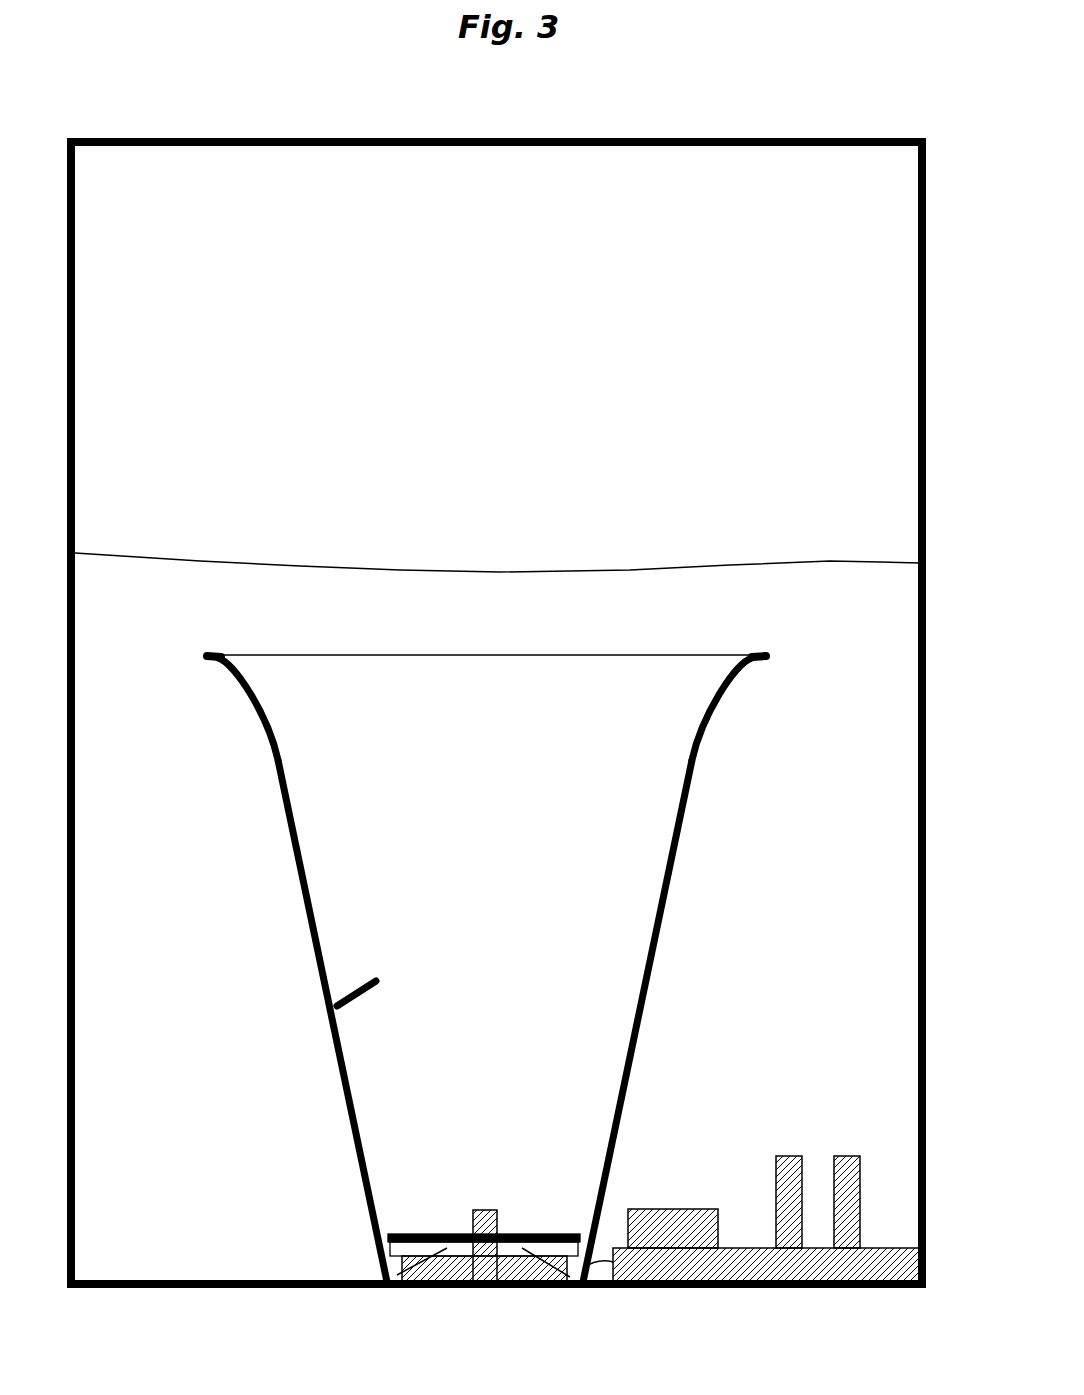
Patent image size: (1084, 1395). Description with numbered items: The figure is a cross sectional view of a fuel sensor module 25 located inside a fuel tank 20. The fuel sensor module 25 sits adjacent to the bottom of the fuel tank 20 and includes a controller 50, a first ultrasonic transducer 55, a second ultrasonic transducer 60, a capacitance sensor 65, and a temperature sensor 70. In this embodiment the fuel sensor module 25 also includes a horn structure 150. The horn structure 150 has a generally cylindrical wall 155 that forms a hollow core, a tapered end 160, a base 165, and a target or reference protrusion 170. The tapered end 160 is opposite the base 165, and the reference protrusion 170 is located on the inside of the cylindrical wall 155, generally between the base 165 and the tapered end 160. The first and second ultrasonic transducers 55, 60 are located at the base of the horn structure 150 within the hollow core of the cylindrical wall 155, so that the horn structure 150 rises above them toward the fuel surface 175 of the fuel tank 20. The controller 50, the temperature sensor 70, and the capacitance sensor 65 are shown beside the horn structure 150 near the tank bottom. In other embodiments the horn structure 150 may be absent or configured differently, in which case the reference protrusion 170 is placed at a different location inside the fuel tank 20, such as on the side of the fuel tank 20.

The fuel tank 20 is at (665, 138).
The fuel sensor module 25 is at (333, 522).
The fuel surface 175 is at (625, 569).
The horn structure 150 is at (732, 878).
The tapered end 160 is at (713, 723).
The cylindrical wall 155 is at (648, 992).
The reference protrusion 170 is at (356, 989).
The base 165 is at (452, 1287).
The first ultrasonic transducer 55 is at (378, 1285).
The second ultrasonic transducer 60 is at (588, 1287).
The controller 50 is at (795, 1270).
The temperature sensor 70 is at (672, 1228).
The capacitance sensor 65 is at (822, 1162).